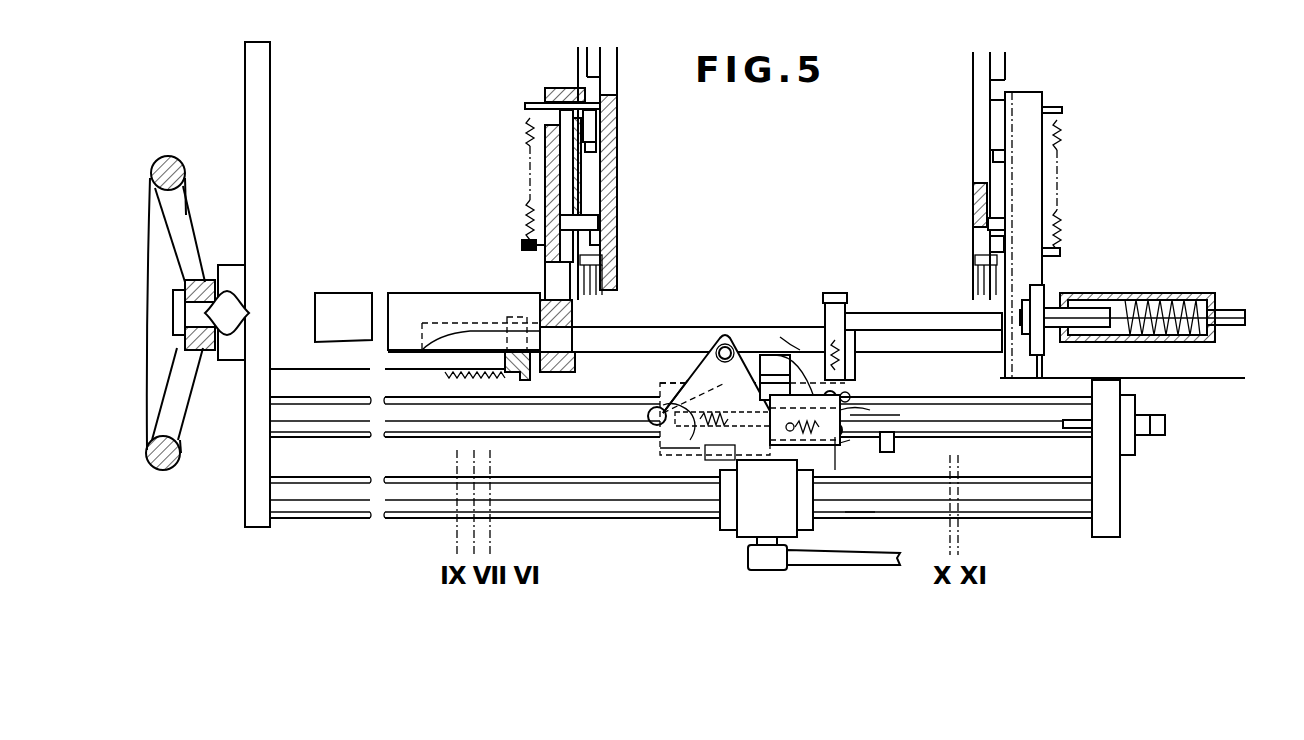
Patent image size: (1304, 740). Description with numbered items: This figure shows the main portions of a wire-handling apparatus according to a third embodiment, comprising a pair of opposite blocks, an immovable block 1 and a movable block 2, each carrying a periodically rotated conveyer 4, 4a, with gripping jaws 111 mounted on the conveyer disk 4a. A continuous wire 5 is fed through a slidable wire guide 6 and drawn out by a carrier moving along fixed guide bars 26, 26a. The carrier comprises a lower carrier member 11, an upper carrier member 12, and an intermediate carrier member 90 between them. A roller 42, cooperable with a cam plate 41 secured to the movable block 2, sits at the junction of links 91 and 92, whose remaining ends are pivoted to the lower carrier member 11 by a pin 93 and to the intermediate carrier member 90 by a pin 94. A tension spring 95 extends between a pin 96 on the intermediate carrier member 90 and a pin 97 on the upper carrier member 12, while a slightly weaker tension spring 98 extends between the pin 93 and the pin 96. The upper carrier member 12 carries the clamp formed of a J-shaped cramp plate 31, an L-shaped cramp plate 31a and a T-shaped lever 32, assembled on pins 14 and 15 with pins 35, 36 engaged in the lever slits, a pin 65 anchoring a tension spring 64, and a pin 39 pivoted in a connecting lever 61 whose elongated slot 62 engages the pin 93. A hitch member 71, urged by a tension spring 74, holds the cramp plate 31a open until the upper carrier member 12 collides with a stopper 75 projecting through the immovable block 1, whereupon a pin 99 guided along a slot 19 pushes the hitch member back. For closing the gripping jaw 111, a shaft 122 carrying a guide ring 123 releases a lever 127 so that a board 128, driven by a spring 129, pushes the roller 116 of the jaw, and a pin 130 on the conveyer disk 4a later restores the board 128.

The immovable block 1 is at (1033, 85).
The movable block 2 is at (540, 83).
The conveyer 4 is at (973, 100).
The conveyer disk 4a is at (618, 105).
The continuous wire 5 is at (910, 320).
The slidable wire guide 6 is at (1040, 302).
The lower carrier member 11 is at (684, 448).
The upper carrier member 12 is at (878, 455).
The pin 14 is at (850, 348).
The pin 15 is at (860, 392).
The slot 19 is at (860, 428).
The guide bar 26 is at (600, 410).
The lower guide rail 26a is at (585, 518).
The J-shaped cramp plate 31 is at (838, 310).
The L-shaped cramp plate 31a is at (826, 308).
The T-shaped lever 32 is at (795, 366).
The pin 35 is at (766, 366).
The pin 36 is at (898, 405).
The pin 39 is at (832, 470).
The cam plate 41 is at (362, 293).
The roller 42 is at (719, 340).
The connecting lever 61 is at (785, 447).
The elongated slot 62 is at (664, 412).
The tension spring 64 is at (838, 392).
The pin 65 is at (808, 322).
The hitch member 71 is at (860, 385).
The tension spring 74 is at (858, 517).
The stopper 75 is at (1122, 445).
The intermediate carrier member 90 is at (766, 498).
The link 91 is at (688, 383).
The link 92 is at (730, 340).
The pin 93 is at (665, 440).
The pin 94 is at (745, 432).
The tension spring 95 is at (843, 532).
The pin 96 is at (895, 445).
The pin 97 is at (768, 535).
The tension spring 98 is at (712, 455).
The pin 99 is at (905, 415).
The gripping jaw 111 is at (615, 292).
The roller 116 is at (604, 240).
The shaft 122 is at (624, 341).
The guide ring 123 is at (528, 380).
The lever 127 is at (596, 130).
The board 128 is at (553, 162).
The spring 129 is at (530, 130).
The pin 130 is at (596, 150).